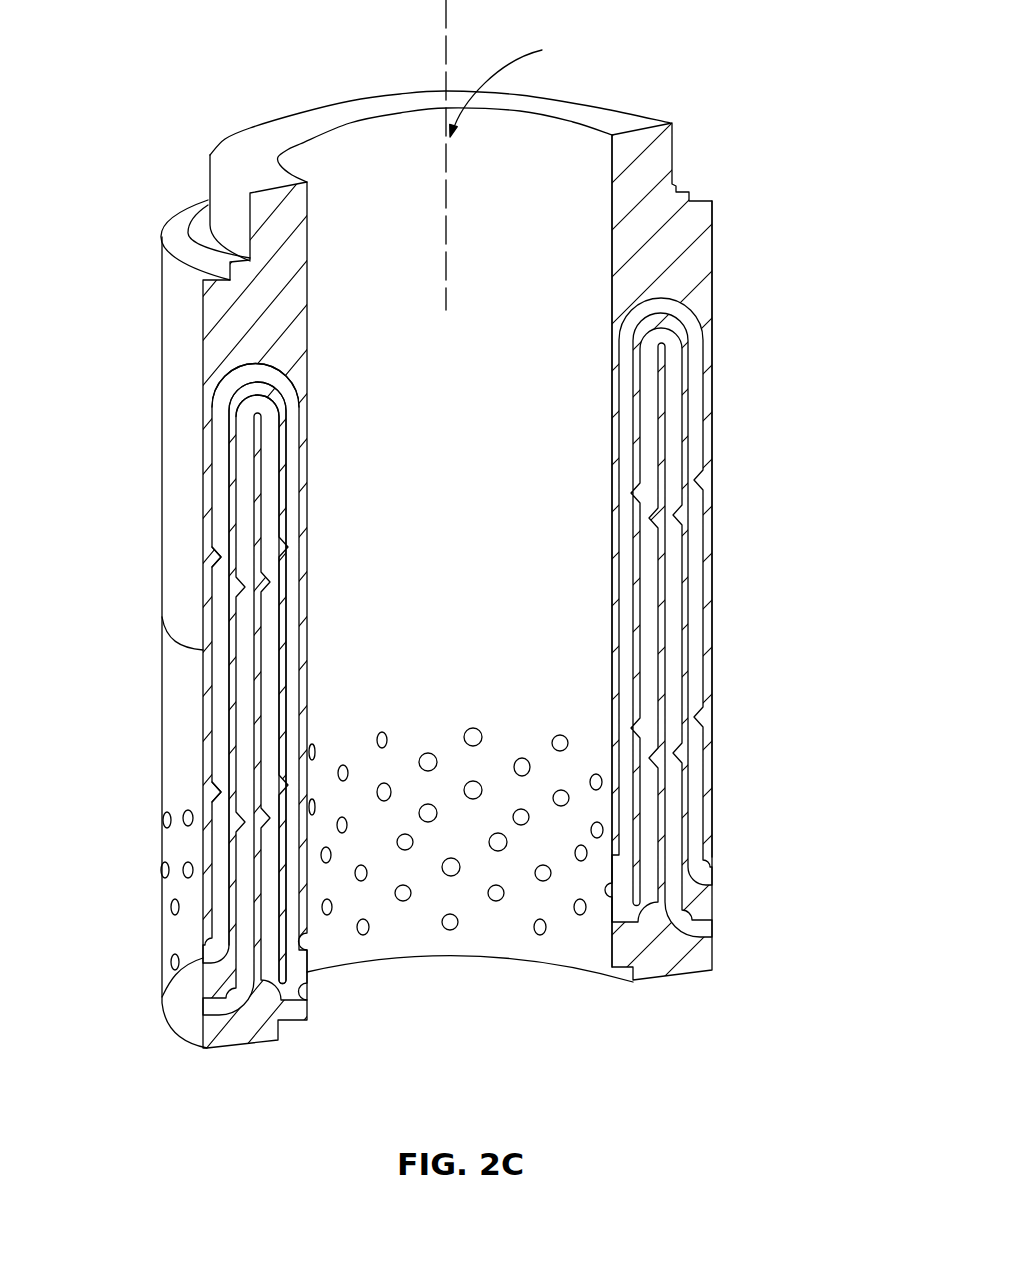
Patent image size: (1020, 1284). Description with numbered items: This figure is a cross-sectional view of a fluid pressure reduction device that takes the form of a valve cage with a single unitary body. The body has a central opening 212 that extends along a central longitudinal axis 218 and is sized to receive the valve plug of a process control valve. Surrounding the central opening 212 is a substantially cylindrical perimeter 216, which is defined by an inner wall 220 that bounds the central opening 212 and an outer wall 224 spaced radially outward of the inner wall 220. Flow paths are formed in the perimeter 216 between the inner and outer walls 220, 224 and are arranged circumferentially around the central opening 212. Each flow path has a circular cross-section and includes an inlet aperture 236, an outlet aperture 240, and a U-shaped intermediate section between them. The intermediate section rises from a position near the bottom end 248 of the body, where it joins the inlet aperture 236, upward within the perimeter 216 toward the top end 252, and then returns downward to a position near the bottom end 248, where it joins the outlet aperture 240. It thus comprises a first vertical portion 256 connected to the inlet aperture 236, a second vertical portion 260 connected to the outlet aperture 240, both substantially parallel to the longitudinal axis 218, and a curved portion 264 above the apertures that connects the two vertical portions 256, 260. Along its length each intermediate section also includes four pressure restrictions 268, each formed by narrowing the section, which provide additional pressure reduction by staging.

The central opening 212 is at (516, 88).
The substantially cylindrical perimeter 216 is at (643, 163).
The central longitudinal axis 218 is at (450, 28).
The inner wall 220 is at (613, 238).
The outer wall 224 is at (713, 278).
The inlet aperture 236 is at (449, 931).
The outlet aperture 240 is at (163, 1002).
The bottom end 248 is at (664, 980).
The top end 252 is at (622, 122).
The first vertical portion 256 is at (290, 623).
The second vertical portion 260 is at (212, 465).
The curved portion 264 is at (253, 363).
The pressure restrictions 268 is at (218, 558).